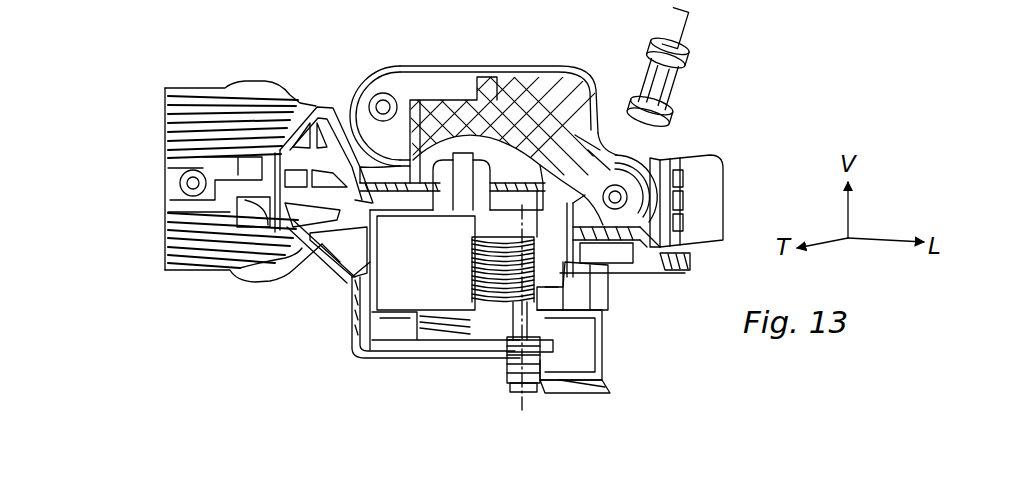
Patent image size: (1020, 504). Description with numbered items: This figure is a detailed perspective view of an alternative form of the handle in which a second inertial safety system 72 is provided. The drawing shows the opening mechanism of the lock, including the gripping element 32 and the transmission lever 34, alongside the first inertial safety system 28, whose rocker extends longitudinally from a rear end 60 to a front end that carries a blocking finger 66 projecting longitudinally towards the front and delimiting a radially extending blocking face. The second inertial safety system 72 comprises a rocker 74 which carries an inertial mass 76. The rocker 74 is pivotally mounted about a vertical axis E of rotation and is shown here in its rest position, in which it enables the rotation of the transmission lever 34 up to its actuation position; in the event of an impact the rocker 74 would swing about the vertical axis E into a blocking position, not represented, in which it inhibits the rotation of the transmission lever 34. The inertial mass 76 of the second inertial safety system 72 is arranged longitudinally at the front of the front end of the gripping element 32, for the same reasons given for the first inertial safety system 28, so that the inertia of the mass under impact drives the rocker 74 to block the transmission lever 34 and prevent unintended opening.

The first inertial safety system 28 is at (690, 273).
The gripping element 32 is at (312, 97).
The transmission lever 34 is at (675, 148).
The rear end 60 is at (563, 213).
The blocking finger 66 is at (672, 258).
The second inertial safety system 72 is at (644, 337).
The rocker 74 is at (614, 292).
The inertial mass 76 is at (612, 347).
The vertical axis of rotation E is at (520, 410).